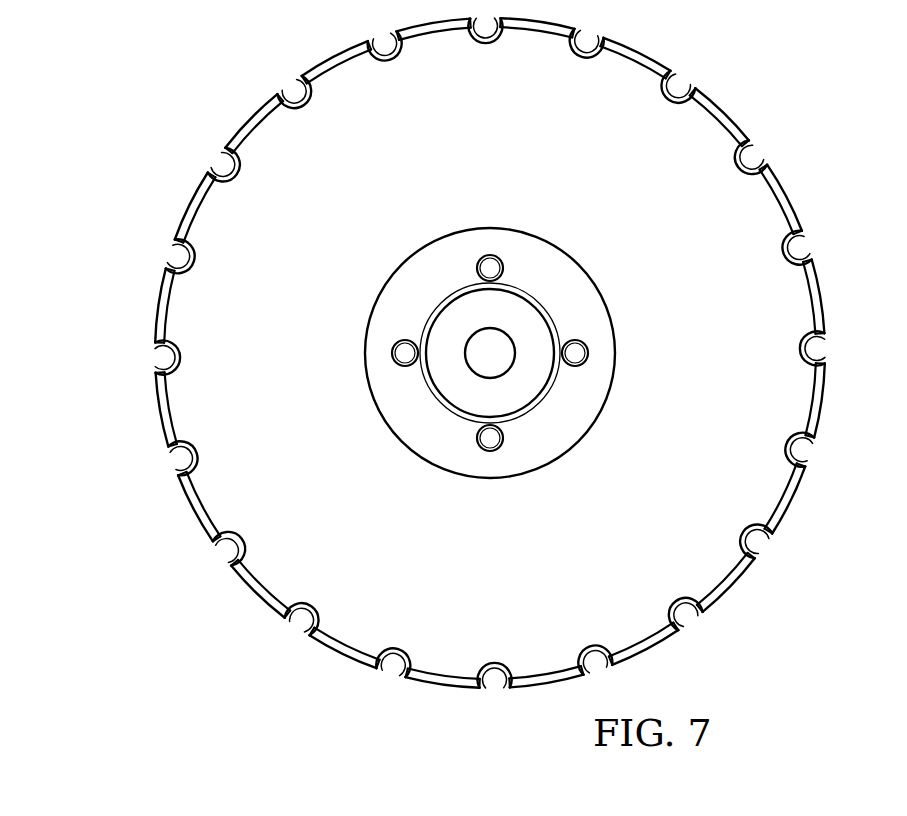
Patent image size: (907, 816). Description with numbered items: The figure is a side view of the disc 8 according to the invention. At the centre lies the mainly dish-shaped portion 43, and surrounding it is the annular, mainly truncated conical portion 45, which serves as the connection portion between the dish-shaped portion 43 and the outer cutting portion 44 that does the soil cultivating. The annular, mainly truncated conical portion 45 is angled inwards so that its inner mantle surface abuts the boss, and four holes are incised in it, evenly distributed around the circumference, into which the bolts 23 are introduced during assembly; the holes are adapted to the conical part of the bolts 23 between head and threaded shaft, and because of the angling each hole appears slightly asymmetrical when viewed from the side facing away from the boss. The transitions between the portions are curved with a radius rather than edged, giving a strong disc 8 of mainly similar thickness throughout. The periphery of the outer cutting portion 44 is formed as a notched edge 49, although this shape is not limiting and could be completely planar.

The disc 8 is at (177, 497).
The bolts 23 is at (491, 268).
The dish-shaped portion 43 is at (513, 330).
The outer cutting portion 44 is at (690, 558).
The annular, mainly truncated conical portion 45 is at (563, 424).
The notched edge 49 is at (232, 562).